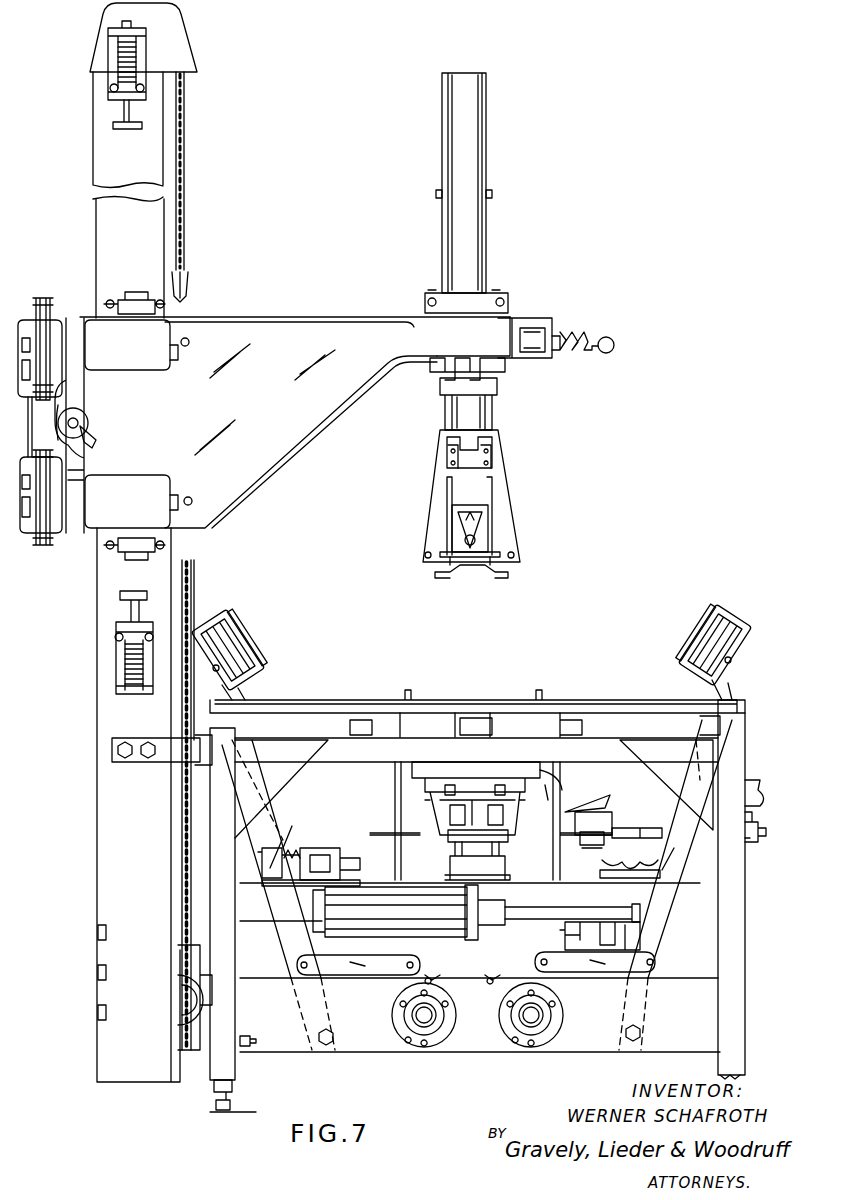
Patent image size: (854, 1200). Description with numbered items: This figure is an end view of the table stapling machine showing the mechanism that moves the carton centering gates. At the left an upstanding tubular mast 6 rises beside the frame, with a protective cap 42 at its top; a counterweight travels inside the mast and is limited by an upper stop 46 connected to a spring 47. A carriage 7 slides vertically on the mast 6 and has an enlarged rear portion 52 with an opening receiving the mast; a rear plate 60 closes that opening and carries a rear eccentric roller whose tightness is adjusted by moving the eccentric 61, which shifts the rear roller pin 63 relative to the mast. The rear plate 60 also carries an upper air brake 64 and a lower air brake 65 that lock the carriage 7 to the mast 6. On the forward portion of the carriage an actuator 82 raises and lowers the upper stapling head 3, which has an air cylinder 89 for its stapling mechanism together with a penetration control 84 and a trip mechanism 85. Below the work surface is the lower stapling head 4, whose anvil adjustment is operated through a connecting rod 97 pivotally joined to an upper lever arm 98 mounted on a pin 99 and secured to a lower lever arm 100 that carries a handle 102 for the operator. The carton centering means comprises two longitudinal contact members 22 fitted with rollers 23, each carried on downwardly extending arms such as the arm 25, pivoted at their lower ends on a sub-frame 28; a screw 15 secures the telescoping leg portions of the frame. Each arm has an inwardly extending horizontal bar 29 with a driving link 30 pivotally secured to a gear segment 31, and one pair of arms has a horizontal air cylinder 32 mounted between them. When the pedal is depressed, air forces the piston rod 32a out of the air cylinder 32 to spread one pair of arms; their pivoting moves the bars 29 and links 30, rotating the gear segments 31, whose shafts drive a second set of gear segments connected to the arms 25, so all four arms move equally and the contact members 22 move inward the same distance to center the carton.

The upper stapling head 3 is at (512, 516).
The lower stapling head 4 is at (450, 849).
The mast 6 is at (146, 542).
The carriage 7 is at (347, 400).
The screw 15 is at (252, 1040).
The contact member 22 is at (247, 612).
The roller 23 is at (262, 650).
The arm 25 is at (276, 828).
The sub-frame 28 is at (360, 1055).
The bar 29 is at (340, 978).
The driving link 30 is at (432, 977).
The gear segment 31 is at (456, 980).
The air cylinder 32 is at (476, 915).
The piston rod 32a is at (527, 908).
The protective cap 42 is at (182, 46).
The upper stop 46 is at (118, 130).
The spring 47 is at (120, 50).
The enlarged rear portion 52 is at (296, 446).
The rear plate 60 is at (38, 418).
The eccentric 61 is at (90, 424).
The rear roller pin 63 is at (100, 436).
The upper air brake 64 is at (24, 330).
The lower air brake 65 is at (38, 540).
The actuator 82 is at (483, 237).
The penetration control 84 is at (482, 531).
The trip mechanism 85 is at (500, 578).
The air cylinder 89 is at (490, 418).
The connecting rod 97 is at (547, 790).
The upper lever arm 98 is at (588, 798).
The pin 99 is at (584, 846).
The lower lever arm 100 is at (608, 838).
The handle 102 is at (754, 846).